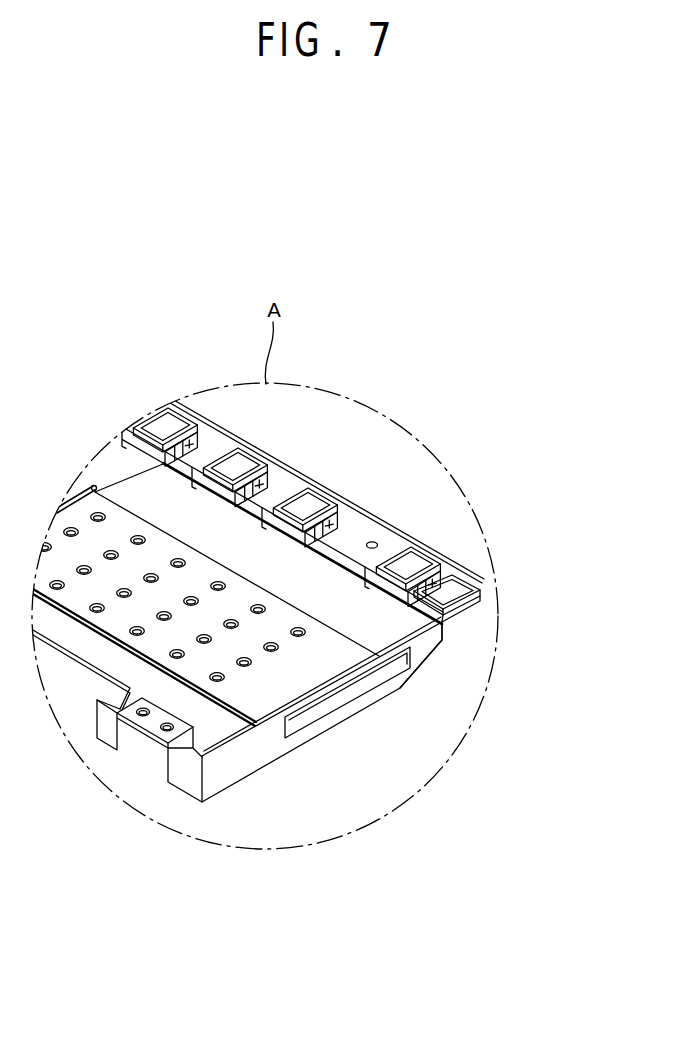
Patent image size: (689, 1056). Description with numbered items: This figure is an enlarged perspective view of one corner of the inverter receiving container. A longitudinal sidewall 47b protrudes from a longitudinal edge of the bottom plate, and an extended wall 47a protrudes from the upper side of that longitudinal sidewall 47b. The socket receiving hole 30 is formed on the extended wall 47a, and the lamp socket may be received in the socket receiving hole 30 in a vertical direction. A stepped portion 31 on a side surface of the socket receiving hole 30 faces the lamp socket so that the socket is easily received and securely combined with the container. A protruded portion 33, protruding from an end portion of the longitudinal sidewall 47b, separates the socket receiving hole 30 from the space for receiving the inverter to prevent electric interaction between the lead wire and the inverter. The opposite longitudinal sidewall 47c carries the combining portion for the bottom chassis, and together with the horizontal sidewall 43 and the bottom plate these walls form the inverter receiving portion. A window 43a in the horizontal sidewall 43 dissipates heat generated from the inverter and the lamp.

The socket receiving hole 30 is at (349, 515).
The stepped portion 31 is at (265, 488).
The protruded portion 33 is at (160, 468).
The horizontal sidewall 43 is at (247, 762).
The window 43a is at (372, 686).
The extended wall 47a is at (472, 600).
The longitudinal sidewall 47b is at (447, 623).
The opposite longitudinal sidewall 47c is at (175, 763).